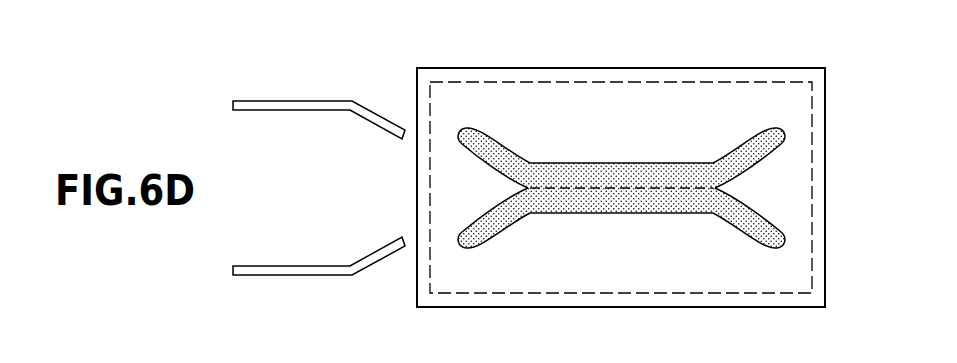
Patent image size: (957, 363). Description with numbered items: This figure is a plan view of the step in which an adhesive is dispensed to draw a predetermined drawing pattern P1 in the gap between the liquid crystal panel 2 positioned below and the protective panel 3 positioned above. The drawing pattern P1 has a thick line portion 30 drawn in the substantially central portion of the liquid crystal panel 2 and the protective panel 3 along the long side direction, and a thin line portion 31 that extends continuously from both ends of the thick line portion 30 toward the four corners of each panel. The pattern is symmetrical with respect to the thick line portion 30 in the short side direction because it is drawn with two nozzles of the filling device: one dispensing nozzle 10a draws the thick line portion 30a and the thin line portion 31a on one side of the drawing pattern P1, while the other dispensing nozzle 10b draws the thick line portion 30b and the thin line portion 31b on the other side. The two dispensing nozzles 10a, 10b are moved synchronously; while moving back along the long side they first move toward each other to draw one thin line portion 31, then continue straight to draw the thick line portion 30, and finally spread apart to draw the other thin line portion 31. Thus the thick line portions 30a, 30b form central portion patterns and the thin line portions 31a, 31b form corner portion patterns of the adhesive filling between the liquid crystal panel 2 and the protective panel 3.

The liquid crystal panel 2 is at (812, 117).
The protective panel 3 is at (825, 190).
The one dispensing nozzle 10a is at (314, 100).
The other dispensing nozzle 10b is at (314, 276).
The thick line portion 30 is at (621, 189).
The thick line portion 30a is at (675, 163).
The thick line portion 30b is at (675, 213).
The thin line portion 31 is at (623, 189).
The thin line portion 31a is at (486, 141).
The thin line portion 31b is at (486, 236).
The drawing pattern P1 is at (594, 142).